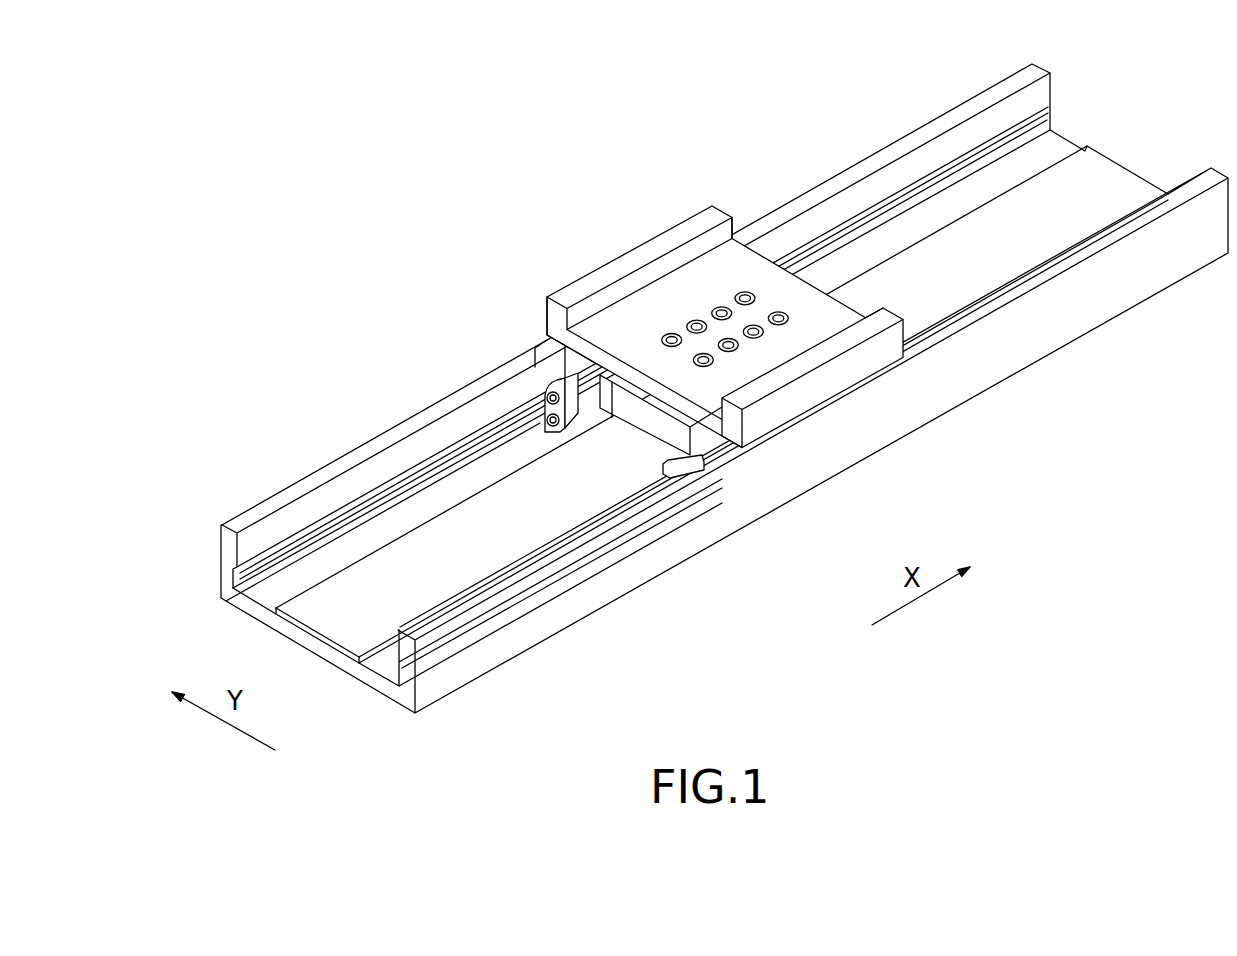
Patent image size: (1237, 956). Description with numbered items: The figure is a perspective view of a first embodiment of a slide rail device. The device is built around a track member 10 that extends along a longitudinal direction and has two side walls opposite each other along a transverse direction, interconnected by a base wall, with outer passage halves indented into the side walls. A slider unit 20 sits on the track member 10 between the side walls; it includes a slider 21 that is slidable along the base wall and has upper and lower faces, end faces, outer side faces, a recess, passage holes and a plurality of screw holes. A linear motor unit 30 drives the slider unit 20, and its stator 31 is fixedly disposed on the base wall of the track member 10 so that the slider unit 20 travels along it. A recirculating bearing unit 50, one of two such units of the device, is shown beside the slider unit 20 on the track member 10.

The track member 10 is at (983, 393).
The slider unit 20 is at (725, 314).
The slider 21 is at (658, 243).
The linear motor unit 30 is at (427, 550).
The stator 31 is at (335, 578).
The recirculating bearing unit 50 is at (561, 391).